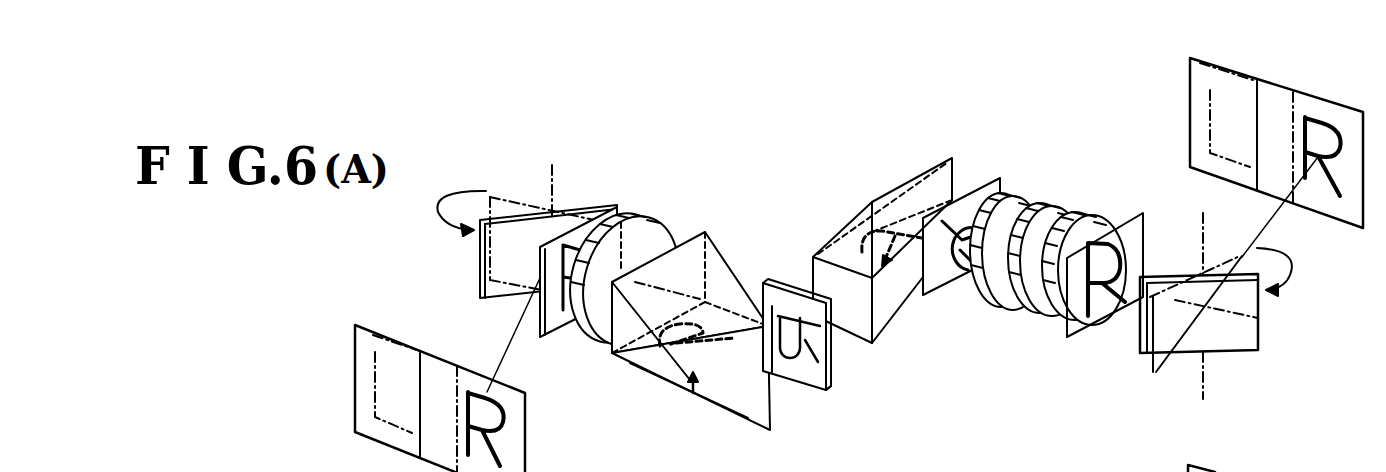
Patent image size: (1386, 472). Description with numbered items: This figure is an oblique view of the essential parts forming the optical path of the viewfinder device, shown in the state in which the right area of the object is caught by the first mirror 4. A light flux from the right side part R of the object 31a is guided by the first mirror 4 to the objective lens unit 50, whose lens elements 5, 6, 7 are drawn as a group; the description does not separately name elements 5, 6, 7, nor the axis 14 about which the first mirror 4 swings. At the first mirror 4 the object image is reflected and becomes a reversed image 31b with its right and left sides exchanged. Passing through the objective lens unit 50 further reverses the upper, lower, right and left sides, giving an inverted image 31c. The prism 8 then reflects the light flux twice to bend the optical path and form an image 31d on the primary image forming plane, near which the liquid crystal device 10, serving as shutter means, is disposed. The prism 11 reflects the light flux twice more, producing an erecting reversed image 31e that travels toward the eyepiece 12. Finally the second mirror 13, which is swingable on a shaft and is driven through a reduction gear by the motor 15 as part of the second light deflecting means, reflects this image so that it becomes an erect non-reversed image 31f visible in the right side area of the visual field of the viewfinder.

The first mirror 4 is at (1250, 342).
The lens 5 is at (1084, 227).
The lens 6 is at (1048, 204).
The lens 7 is at (1013, 193).
The prism 8 is at (920, 173).
The liquid crystal device 10 is at (826, 385).
The prism 11 is at (760, 400).
The eyepiece 12 is at (645, 230).
The second mirror 13 is at (480, 292).
The rotation axis of mirror 4 14 is at (1235, 323).
The motor 15 is at (506, 182).
The object 31a is at (1272, 105).
The reversed image 31b is at (1069, 336).
The inverted image 31c is at (934, 283).
The image on primary image forming plane 31d is at (768, 282).
The erecting reversed image 31e is at (616, 205).
The erect non-reversed image 31f is at (513, 453).
The objective lens unit 50 is at (1048, 196).